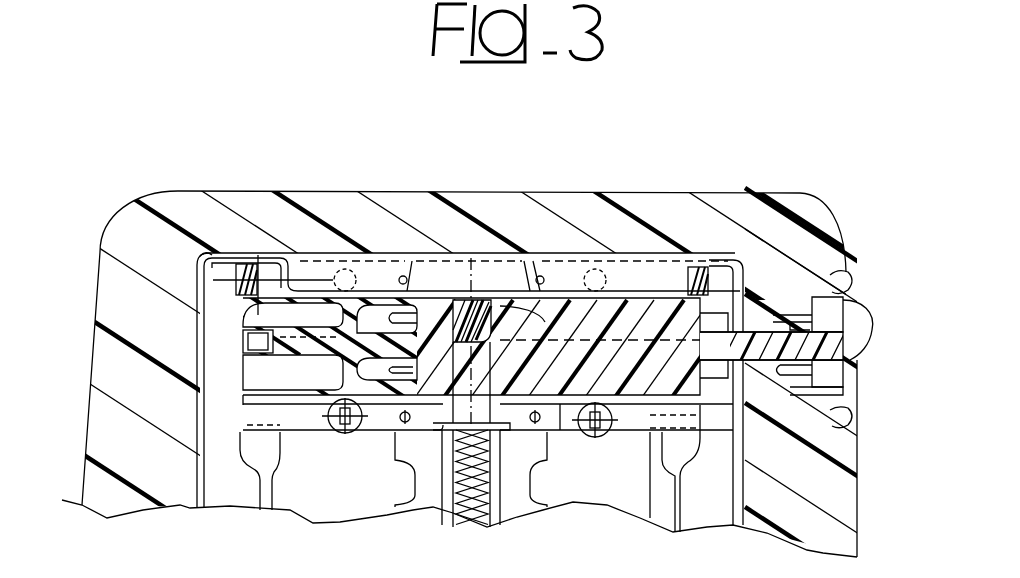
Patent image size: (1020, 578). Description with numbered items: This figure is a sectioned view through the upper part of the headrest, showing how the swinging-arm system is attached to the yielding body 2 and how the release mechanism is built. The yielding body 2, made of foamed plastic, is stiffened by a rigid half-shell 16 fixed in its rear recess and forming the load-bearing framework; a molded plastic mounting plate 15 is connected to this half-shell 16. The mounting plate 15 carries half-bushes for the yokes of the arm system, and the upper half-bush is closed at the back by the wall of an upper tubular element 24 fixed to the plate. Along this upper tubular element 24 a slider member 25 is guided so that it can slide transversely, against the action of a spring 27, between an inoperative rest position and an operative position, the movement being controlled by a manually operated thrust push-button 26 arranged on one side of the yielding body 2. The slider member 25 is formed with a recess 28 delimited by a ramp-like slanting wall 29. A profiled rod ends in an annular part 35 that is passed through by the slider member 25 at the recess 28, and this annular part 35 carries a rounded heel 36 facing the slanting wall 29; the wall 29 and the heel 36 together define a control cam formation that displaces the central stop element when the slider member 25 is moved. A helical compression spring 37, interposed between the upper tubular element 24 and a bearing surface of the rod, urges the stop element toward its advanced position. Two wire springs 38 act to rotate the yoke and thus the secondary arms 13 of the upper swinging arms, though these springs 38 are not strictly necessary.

The yielding body 2 is at (797, 240).
The secondary arms 13 is at (263, 455).
The mounting plate 15 is at (333, 498).
The rigid half-shell 16 is at (210, 250).
The upper tubular element 24 is at (568, 398).
The slider member 25 is at (583, 332).
The thrust push-button 26 is at (858, 348).
The spring 27 is at (350, 312).
The recess 28 is at (470, 200).
The ramp-like slanting wall 29 is at (545, 312).
The annular part 35 is at (463, 403).
The rounded heel 36 is at (470, 295).
The helical compression spring 37 is at (478, 518).
The wire springs 38 is at (258, 260).